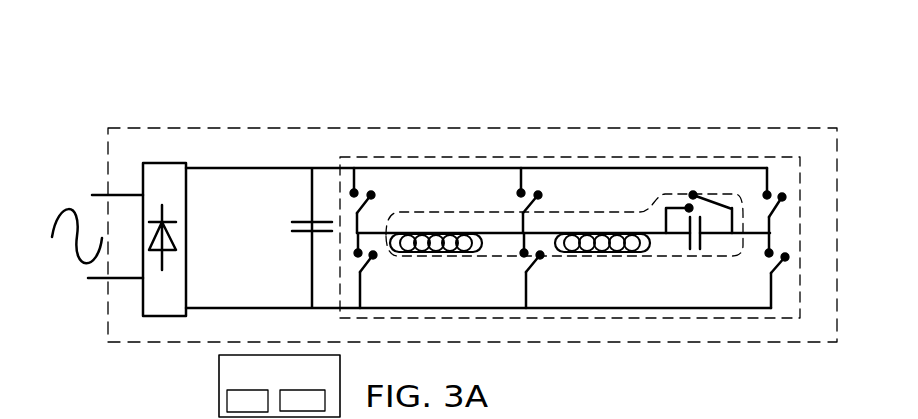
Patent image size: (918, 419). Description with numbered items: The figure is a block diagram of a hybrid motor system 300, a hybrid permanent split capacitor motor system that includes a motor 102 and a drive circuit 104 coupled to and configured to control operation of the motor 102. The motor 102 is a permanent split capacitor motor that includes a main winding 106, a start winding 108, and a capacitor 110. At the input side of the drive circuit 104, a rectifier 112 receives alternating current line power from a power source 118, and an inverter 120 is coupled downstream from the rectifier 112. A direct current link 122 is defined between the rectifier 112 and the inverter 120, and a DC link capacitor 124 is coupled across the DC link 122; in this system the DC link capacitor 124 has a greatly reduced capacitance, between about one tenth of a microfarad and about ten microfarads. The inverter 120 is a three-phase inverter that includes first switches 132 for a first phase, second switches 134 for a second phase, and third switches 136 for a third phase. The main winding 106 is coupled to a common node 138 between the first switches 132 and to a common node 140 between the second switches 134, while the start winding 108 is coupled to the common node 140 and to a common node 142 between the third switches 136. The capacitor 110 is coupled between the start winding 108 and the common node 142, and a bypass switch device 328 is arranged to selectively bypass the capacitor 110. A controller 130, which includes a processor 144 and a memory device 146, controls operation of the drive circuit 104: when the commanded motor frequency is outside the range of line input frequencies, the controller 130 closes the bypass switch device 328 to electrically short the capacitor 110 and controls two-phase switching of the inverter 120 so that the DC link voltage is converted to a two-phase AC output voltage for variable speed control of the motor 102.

The hybrid motor system 300 is at (172, 49).
The power source 118 is at (43, 236).
The rectifier 112 is at (162, 163).
The DC link 122 is at (284, 168).
The DC link capacitor 124 is at (303, 220).
The drive circuit 104 is at (546, 128).
The inverter 120 is at (668, 320).
The first switches 132 is at (373, 196).
The common node 138 is at (362, 223).
The second switches 134 is at (539, 196).
The common node 140 is at (541, 216).
The third switches 136 is at (786, 195).
The common node 142 is at (770, 232).
The motor 102 is at (503, 215).
The main winding 106 is at (450, 251).
The start winding 108 is at (613, 251).
The capacitor 110 is at (687, 240).
The bypass switch device 328 is at (696, 188).
The controller 130 is at (219, 367).
The processor 144 is at (247, 401).
The memory device 146 is at (302, 400).